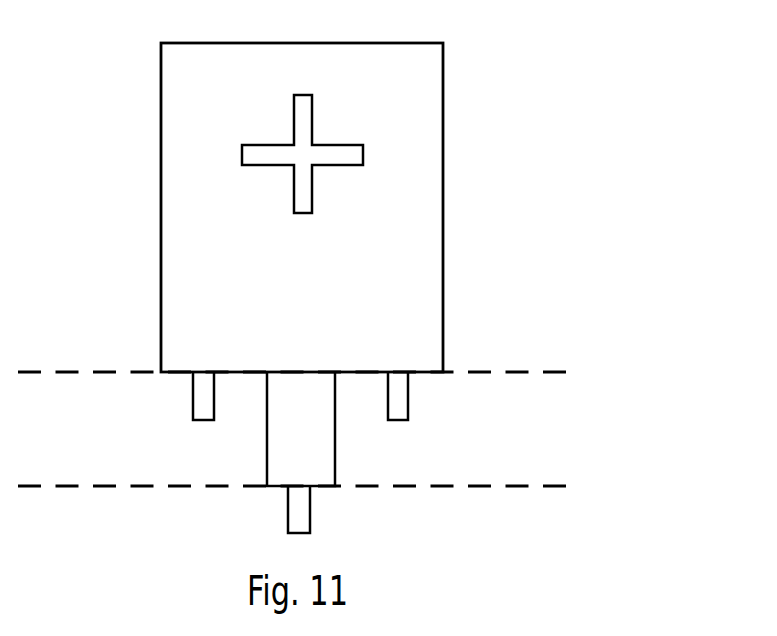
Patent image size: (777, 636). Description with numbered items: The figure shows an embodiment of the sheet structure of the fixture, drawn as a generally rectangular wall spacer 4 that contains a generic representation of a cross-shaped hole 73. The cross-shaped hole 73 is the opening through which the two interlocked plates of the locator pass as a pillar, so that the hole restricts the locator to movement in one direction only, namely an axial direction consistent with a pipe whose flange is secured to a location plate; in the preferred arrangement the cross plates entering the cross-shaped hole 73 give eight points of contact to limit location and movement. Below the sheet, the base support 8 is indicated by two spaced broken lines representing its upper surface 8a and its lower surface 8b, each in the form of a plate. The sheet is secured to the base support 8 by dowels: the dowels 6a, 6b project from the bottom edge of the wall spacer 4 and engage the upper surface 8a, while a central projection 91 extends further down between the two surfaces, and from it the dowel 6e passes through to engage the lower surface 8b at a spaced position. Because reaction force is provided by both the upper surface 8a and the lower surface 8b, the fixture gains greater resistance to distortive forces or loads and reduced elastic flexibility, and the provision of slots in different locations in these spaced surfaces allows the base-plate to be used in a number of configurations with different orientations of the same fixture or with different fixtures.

The wall spacer 4 is at (430, 171).
The cross-shaped hole 73 is at (312, 118).
The base support 8 is at (316, 415).
The upper surface 8a is at (484, 368).
The lower surface 8b is at (527, 490).
The dowel 6a is at (193, 410).
The dowel 6b is at (408, 410).
The central pin / projection 91 is at (335, 455).
The dowel 6e is at (310, 522).